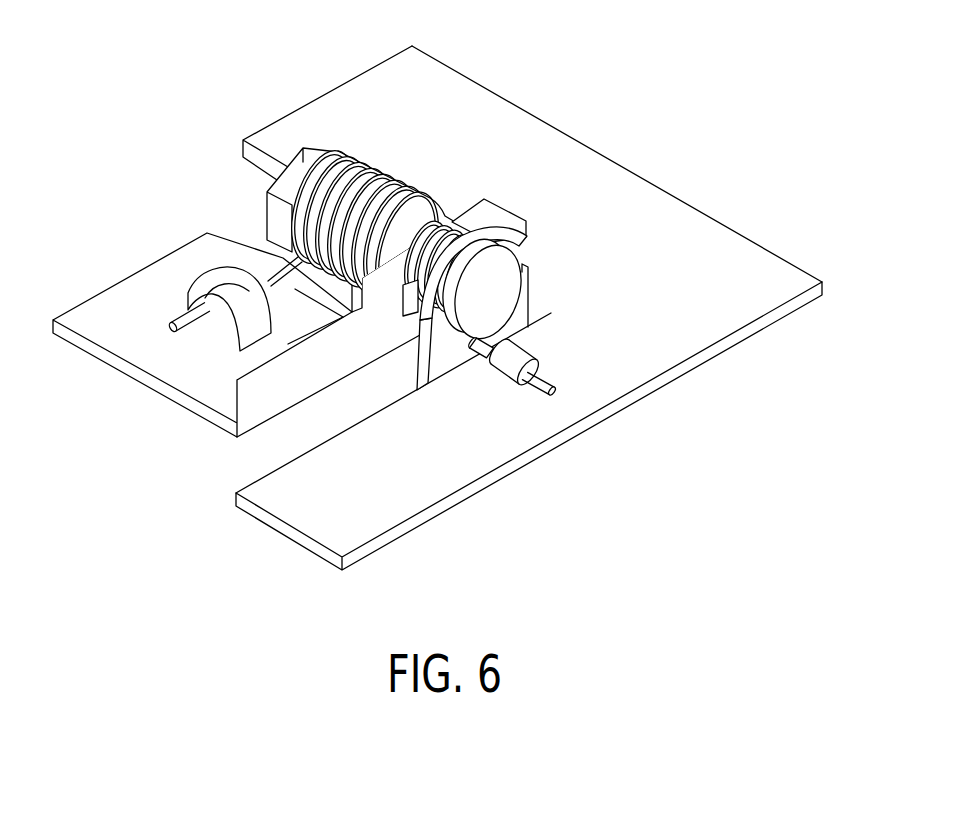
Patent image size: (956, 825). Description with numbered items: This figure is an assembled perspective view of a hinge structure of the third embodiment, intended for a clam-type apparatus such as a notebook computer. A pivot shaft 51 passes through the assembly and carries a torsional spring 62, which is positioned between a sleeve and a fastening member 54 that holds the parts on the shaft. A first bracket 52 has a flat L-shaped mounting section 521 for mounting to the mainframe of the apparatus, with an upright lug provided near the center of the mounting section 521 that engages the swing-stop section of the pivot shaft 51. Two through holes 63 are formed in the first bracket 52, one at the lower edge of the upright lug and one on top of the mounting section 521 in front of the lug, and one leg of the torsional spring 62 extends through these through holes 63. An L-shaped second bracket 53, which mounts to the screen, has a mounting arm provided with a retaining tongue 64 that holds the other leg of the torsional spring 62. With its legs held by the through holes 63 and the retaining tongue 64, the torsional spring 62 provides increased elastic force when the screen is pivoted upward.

The pivot shaft 51 is at (503, 293).
The first bracket 52 is at (529, 295).
The L-shaped mounting section 521 is at (645, 139).
The second bracket 53 is at (112, 307).
The fastening member 54 is at (305, 146).
The torsional spring 62 is at (373, 163).
The through holes 63 is at (526, 384).
The retaining tongue 64 is at (235, 287).